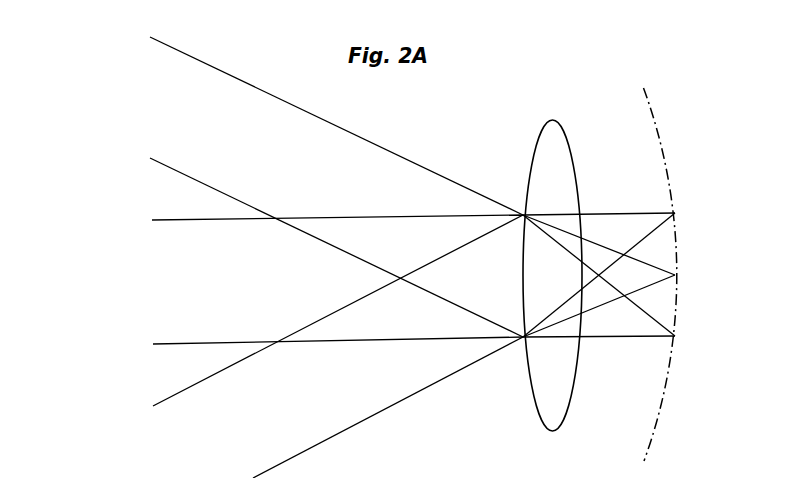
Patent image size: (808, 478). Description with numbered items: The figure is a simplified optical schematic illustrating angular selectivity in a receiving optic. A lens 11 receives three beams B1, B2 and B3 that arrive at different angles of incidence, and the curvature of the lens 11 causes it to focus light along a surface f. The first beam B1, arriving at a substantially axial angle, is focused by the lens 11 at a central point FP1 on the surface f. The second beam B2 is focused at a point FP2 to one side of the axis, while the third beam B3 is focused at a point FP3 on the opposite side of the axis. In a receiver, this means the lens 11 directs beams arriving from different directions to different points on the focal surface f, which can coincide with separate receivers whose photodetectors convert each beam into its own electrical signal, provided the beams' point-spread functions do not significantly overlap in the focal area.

The lens 11 is at (545, 114).
The first beam B1 is at (331, 279).
The second beam B2 is at (330, 187).
The third beam B3 is at (335, 346).
The central point FP1 is at (623, 276).
The focal point FP2 is at (623, 281).
The focal point FP3 is at (623, 269).
The focal surface f is at (658, 263).